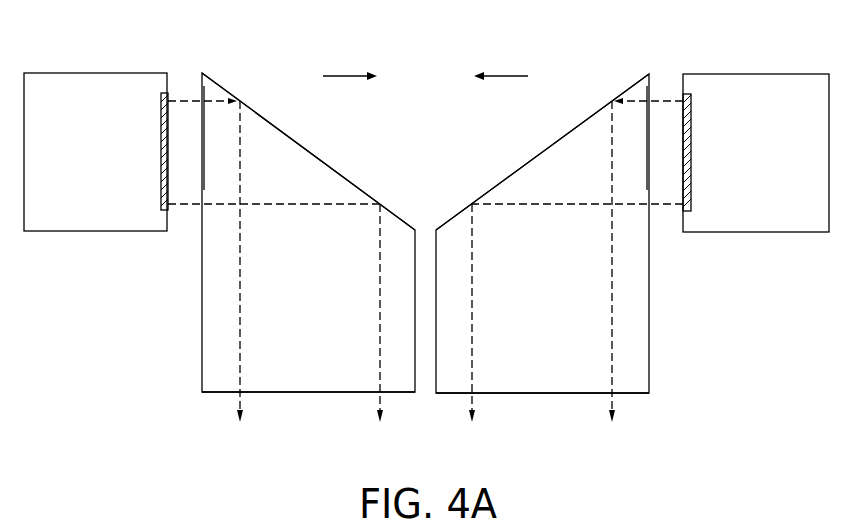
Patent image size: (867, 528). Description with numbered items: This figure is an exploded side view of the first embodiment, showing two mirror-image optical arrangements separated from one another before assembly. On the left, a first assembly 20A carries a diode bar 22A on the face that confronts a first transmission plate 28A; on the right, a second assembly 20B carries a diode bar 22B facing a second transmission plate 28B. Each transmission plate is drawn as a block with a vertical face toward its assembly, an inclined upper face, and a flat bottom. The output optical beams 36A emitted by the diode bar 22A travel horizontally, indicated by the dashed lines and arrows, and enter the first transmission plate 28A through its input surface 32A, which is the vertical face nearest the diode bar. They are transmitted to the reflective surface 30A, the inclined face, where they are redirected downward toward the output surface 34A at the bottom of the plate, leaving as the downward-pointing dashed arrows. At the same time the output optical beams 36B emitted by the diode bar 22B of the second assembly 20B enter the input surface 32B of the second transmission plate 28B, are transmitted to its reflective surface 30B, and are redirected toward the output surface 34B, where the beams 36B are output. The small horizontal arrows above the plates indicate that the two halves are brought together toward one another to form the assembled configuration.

The first assembly 20A is at (55, 73).
The second assembly 20B is at (796, 73).
The diode bar 22A is at (160, 112).
The diode bar 22B is at (692, 113).
The first transmission plate 28A is at (202, 347).
The second transmission plate 28B is at (542, 233).
The reflective surface 30A is at (308, 150).
The reflective surface 30B is at (543, 150).
The input surface 32A is at (202, 189).
The input surface 32B is at (650, 189).
The output surface 34A is at (310, 393).
The output surface 34B is at (543, 394).
The output optical beams 36A is at (380, 290).
The output optical beams 36B is at (612, 290).